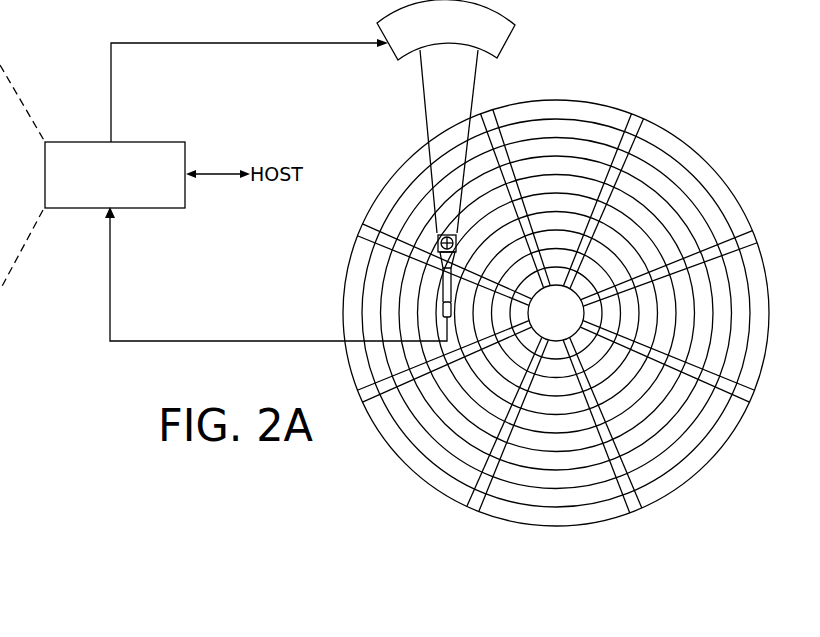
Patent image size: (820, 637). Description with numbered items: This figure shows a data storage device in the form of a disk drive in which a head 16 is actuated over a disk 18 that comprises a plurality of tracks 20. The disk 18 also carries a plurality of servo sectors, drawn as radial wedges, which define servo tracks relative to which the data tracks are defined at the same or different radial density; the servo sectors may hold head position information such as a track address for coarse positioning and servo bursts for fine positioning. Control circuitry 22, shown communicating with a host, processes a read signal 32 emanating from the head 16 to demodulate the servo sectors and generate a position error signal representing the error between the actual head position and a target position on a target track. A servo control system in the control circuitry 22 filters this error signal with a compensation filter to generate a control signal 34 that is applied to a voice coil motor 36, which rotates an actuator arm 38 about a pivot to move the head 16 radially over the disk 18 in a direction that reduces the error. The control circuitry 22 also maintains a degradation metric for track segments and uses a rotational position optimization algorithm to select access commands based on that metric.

The head 16 is at (436, 304).
The disk 18 is at (706, 147).
The tracks 20 is at (560, 122).
The control circuitry 22 is at (151, 141).
The read signal 32 is at (215, 340).
The control signal 34 is at (110, 97).
The voice coil motor 36 is at (391, 50).
The actuator arm 38 is at (432, 128).